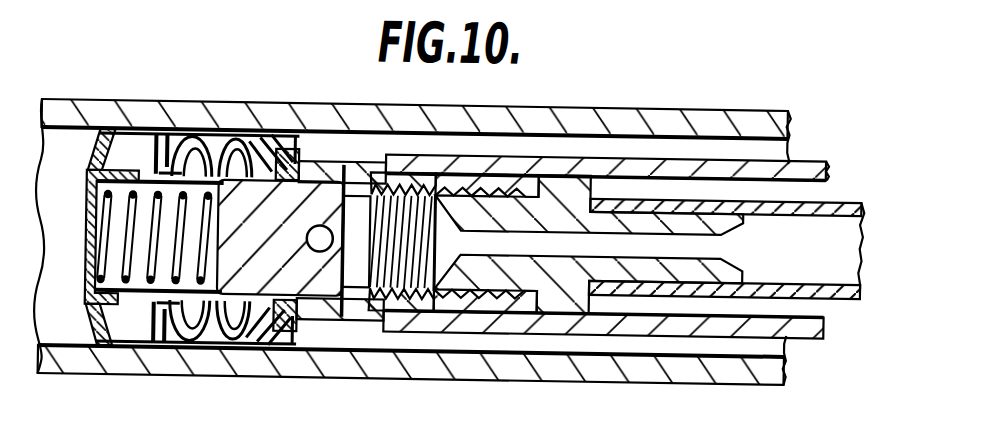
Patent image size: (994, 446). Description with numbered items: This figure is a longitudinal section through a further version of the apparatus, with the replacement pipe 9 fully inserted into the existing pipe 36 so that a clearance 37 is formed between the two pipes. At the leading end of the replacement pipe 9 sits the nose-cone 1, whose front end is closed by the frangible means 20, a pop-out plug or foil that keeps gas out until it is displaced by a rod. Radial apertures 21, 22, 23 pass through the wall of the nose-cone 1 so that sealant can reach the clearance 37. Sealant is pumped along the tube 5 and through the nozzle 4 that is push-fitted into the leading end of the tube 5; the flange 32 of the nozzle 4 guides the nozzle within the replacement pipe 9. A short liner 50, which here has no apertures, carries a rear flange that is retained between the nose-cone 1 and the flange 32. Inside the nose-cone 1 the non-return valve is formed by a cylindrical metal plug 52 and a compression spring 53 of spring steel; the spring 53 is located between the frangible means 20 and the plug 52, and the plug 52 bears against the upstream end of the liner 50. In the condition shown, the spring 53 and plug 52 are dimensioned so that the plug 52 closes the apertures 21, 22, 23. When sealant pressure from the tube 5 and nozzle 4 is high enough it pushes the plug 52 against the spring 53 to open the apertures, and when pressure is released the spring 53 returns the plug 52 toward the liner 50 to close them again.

The nose-cone 1 is at (176, 130).
The nozzle 4 is at (530, 265).
The tube 5 is at (853, 174).
The replacement pipe 9 is at (577, 320).
The frangible means 20 is at (90, 295).
The aperture 21 is at (331, 296).
The aperture 22 is at (258, 300).
The aperture 23 is at (322, 168).
The flange 32 is at (580, 162).
The existing pipe 36 is at (533, 112).
The clearance 37 is at (628, 338).
The liner 50 is at (360, 283).
The plug 52 is at (243, 198).
The spring 53 is at (121, 222).